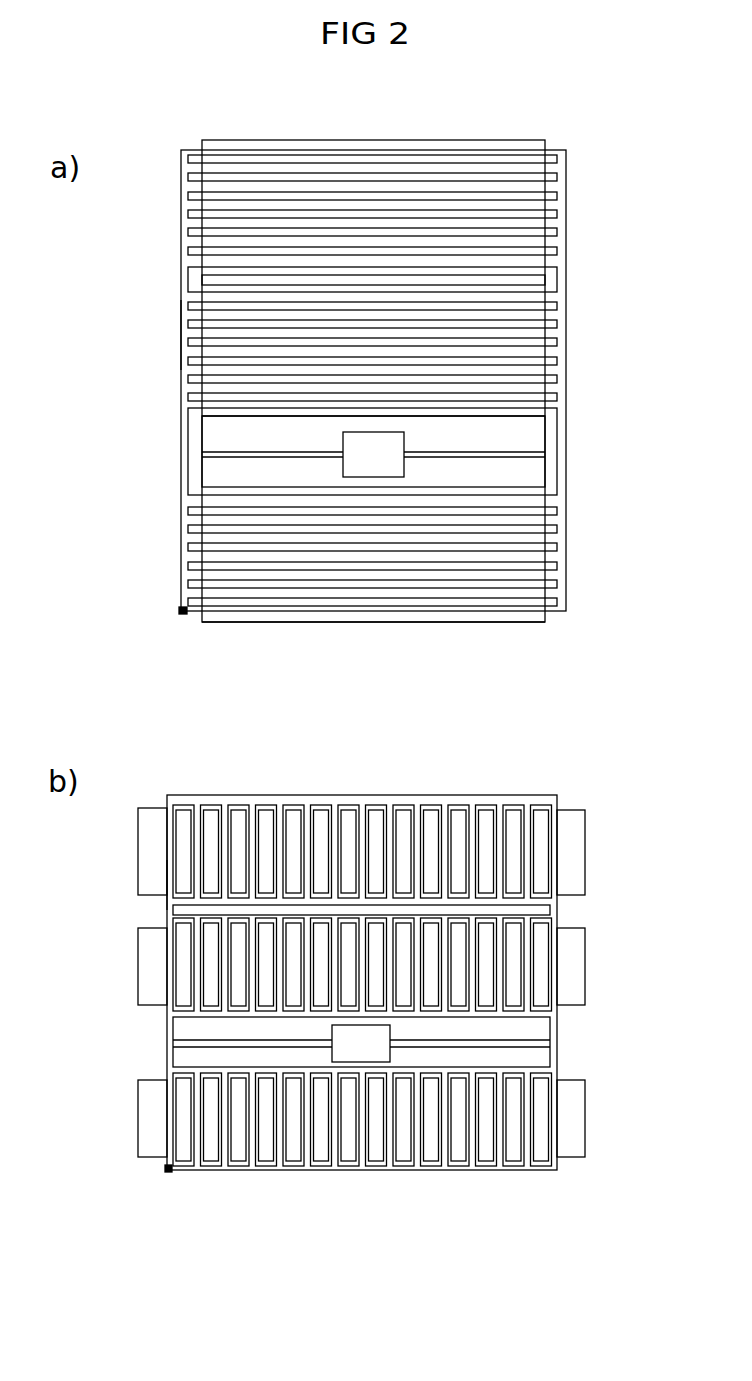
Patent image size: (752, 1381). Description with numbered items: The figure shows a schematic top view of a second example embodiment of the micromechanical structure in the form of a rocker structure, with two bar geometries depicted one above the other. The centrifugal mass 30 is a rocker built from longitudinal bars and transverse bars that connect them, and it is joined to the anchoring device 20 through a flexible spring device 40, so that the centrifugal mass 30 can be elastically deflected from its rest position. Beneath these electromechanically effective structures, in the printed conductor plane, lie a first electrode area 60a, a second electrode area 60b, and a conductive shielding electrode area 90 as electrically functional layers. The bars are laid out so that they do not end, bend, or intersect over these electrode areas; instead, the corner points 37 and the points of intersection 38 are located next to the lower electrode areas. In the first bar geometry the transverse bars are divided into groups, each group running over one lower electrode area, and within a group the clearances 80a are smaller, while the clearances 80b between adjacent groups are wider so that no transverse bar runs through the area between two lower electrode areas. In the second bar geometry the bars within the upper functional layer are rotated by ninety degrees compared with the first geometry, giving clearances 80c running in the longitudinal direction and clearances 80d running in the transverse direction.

The anchoring device 20 is at (343, 465).
The centrifugal mass 30 is at (183, 160).
The corner points 37 is at (179, 606).
The points of intersection 38 is at (183, 334).
The flexible spring device 40 is at (198, 446).
The first electrode area 60a is at (507, 622).
The second electrode area 60b is at (535, 415).
The clearances within a group 80a is at (557, 163).
The wider clearances between groups 80b is at (553, 280).
The clearances running in the longitudinal direction 80c is at (541, 815).
The clearances running in the transverse direction 80d is at (548, 905).
The conductive shielding electrode area 90 is at (517, 140).